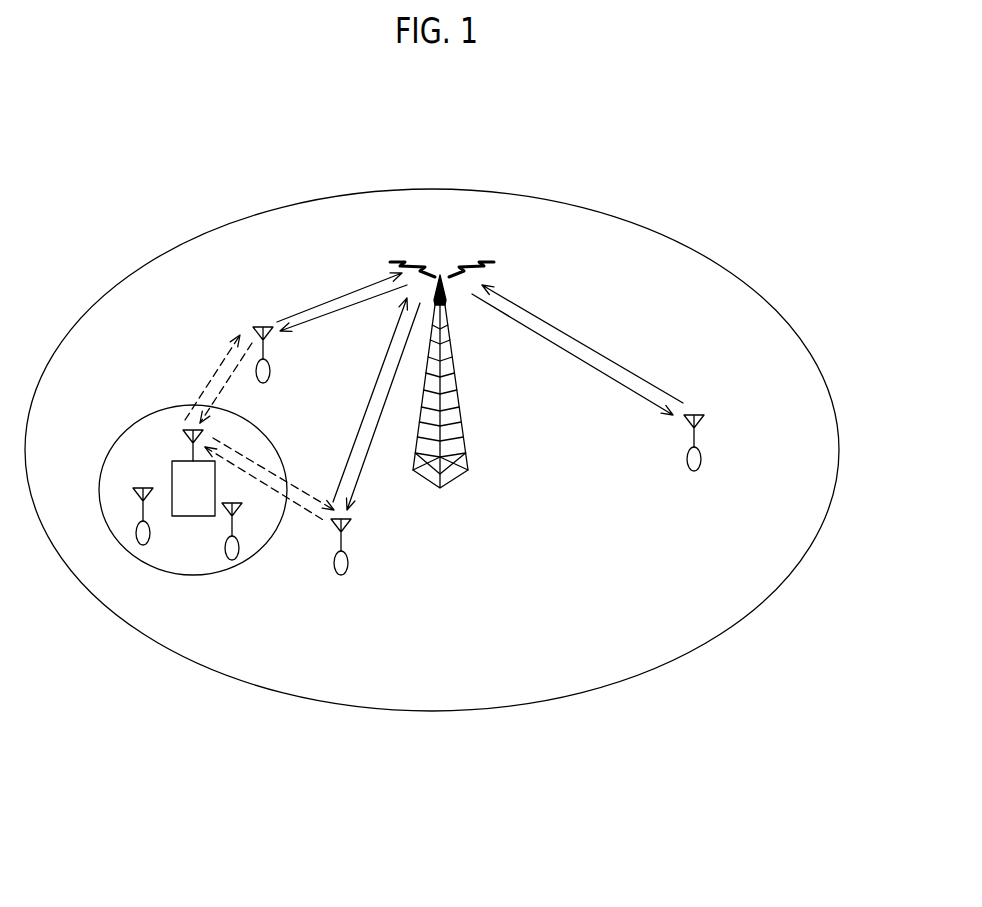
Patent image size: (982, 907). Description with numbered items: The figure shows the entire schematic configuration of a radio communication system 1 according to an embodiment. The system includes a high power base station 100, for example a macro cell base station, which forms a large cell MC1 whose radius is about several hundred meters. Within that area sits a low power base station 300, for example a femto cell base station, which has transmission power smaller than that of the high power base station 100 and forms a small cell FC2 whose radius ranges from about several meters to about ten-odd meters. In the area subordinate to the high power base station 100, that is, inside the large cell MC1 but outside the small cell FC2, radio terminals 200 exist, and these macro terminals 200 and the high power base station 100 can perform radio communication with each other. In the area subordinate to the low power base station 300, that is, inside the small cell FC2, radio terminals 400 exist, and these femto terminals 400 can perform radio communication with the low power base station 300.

The radio communication system 1 is at (643, 133).
The large cell MC1 is at (676, 238).
The small cell FC2 is at (109, 458).
The high power base station 100 is at (461, 425).
The radio terminals 200 is at (263, 325).
The low power base station 300 is at (182, 490).
The radio terminals 400 is at (143, 545).